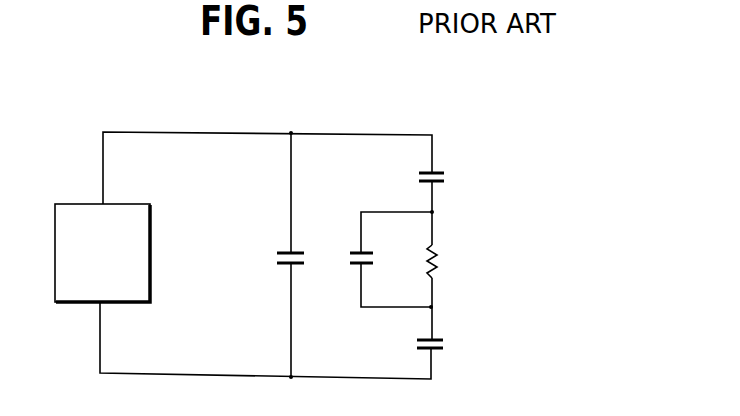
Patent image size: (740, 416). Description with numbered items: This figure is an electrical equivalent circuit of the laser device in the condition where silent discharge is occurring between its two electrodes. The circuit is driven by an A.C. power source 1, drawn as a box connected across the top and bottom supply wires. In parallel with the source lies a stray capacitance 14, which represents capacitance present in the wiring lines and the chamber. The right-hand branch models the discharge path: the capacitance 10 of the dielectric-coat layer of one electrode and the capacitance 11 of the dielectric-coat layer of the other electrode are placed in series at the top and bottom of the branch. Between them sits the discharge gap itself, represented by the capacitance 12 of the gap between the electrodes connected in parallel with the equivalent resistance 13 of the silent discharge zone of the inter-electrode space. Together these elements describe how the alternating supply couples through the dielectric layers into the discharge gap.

The AC power source 1 is at (71, 203).
The capacitance of dielectric-coat layer 10 is at (452, 181).
The capacitance of dielectric-coat layer 11 is at (450, 350).
The capacitance of gap between electrodes 12 is at (349, 262).
The equivalent resistance of silent discharge zone 13 is at (445, 262).
The stray capacitance 14 is at (274, 262).